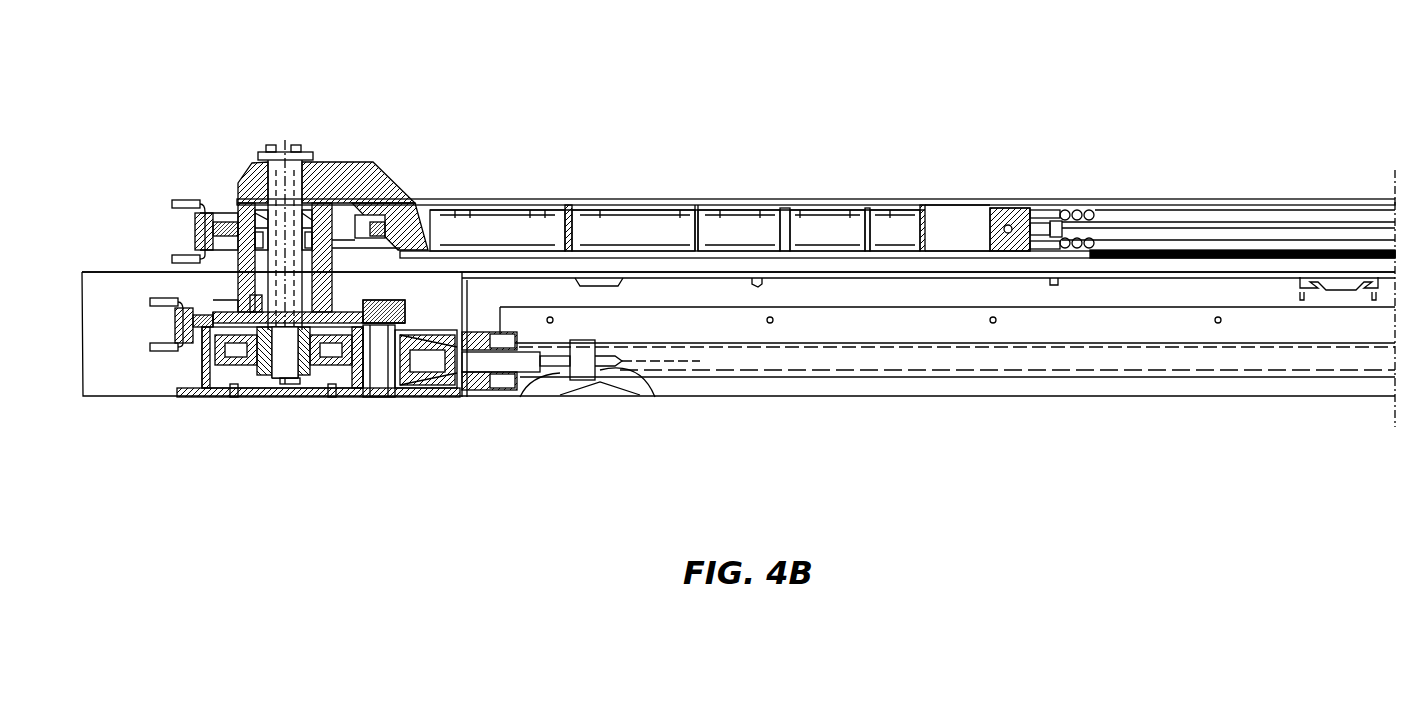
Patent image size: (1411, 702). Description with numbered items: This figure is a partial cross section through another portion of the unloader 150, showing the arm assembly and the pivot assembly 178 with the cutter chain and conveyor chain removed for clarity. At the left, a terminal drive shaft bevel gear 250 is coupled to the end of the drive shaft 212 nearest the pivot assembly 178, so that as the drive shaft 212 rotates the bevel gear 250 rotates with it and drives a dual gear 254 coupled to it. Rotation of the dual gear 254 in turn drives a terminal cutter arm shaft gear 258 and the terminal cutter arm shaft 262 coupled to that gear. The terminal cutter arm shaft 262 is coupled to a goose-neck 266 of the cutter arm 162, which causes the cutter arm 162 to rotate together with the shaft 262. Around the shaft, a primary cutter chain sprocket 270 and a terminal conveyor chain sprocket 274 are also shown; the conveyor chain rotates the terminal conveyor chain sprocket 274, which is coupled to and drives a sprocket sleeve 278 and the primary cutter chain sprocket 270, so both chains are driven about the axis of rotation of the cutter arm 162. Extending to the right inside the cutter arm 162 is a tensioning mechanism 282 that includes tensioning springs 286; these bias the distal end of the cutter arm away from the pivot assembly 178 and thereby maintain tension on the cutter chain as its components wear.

The unloader 150 is at (722, 97).
The pivot assembly 178 is at (285, 135).
The terminal cutter arm shaft 262 is at (272, 192).
The goose-neck 266 is at (372, 165).
The primary cutter chain sprocket 270 is at (370, 230).
The sprocket sleeve 278 is at (330, 285).
The terminal conveyor chain sprocket 274 is at (382, 308).
The terminal cutter arm shaft gear 258 is at (337, 378).
The dual gear 254 is at (402, 378).
The terminal drive shaft bevel gear 250 is at (433, 370).
The drive shaft 212 is at (557, 370).
The cutter arm 162 is at (960, 213).
The tensioning springs 286 is at (1092, 206).
The tensioning mechanism 282 is at (1182, 228).